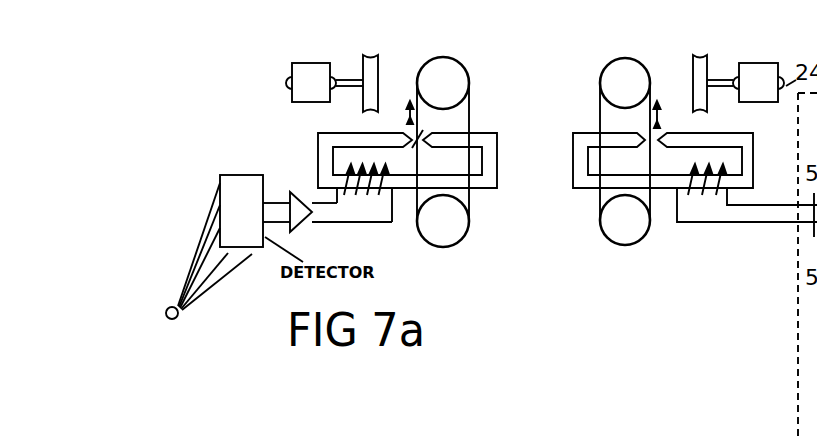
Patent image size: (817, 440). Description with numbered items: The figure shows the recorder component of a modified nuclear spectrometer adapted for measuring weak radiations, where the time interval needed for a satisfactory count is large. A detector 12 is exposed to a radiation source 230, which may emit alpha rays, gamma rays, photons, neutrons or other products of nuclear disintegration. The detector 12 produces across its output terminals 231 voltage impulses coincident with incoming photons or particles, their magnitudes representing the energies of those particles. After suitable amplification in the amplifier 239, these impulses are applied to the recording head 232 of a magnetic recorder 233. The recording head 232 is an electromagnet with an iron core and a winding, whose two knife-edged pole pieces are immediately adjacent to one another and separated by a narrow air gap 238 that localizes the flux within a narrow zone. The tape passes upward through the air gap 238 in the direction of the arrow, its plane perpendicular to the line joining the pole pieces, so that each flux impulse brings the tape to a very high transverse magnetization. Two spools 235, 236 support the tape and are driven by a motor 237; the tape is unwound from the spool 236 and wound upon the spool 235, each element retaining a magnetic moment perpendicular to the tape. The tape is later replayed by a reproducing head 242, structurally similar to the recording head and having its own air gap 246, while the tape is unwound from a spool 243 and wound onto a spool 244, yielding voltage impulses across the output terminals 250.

The detector 12 is at (218, 183).
The radiation source 230 is at (177, 318).
The amplifier 239 is at (301, 222).
The output terminals 231 is at (325, 206).
The recording head 232 is at (487, 190).
The motor 237 is at (292, 101).
The spool 235 is at (420, 72).
The spool 236 is at (462, 238).
The magnetic recorder 233 is at (469, 92).
The air gap 238 is at (440, 131).
The reproducing head 242 is at (572, 153).
The spool 244 is at (647, 73).
The spool 243 is at (608, 240).
The air gap 246 is at (647, 137).
The output terminals 250 is at (773, 205).